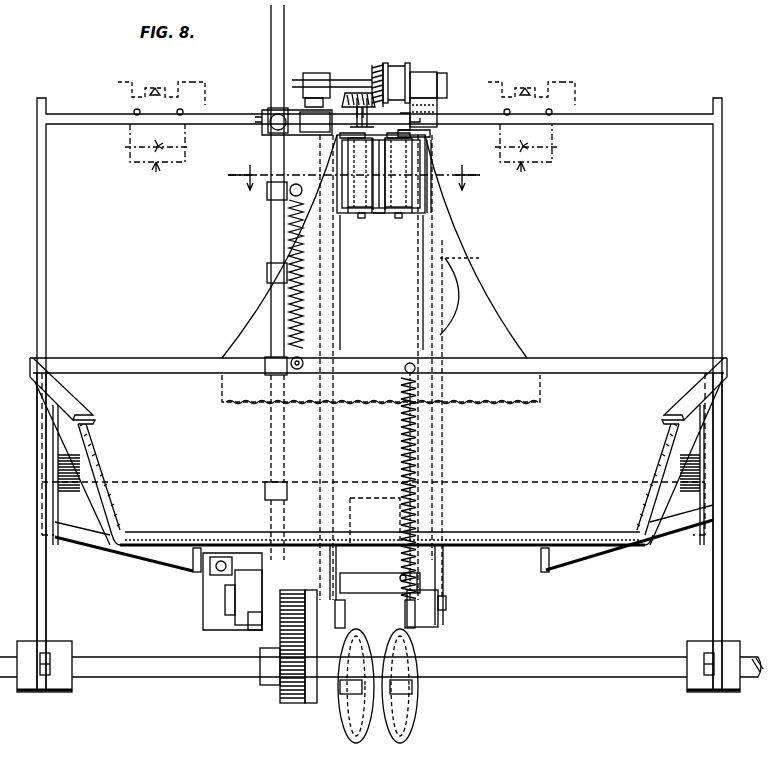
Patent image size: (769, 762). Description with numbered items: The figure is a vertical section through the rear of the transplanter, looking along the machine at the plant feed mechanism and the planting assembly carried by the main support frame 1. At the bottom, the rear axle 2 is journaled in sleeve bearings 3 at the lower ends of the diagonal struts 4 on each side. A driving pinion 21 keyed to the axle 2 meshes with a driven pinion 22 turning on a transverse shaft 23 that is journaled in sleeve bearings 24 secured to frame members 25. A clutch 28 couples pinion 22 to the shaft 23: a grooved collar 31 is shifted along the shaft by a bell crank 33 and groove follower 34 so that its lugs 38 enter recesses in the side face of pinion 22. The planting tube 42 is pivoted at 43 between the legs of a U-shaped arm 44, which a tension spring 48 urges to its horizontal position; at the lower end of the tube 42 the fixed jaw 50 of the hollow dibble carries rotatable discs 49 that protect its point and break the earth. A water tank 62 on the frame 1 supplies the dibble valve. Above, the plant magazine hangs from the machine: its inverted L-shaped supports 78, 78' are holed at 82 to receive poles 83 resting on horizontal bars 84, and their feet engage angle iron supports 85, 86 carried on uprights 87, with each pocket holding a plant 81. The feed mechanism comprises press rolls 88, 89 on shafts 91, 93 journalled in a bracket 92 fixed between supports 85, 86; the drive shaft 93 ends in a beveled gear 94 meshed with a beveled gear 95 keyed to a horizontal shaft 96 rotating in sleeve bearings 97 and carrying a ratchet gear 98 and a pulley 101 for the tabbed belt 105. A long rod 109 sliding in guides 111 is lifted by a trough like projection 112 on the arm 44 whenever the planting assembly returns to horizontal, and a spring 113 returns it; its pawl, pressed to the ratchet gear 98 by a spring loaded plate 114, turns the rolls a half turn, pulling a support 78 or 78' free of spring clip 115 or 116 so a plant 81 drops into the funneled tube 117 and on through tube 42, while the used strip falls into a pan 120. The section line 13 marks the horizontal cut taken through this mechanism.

The main support frame 1 is at (25, 355).
The axle 2 is at (95, 665).
The sleeve bearings 3 is at (58, 650).
The diagonal struts 4 is at (40, 553).
The section line 13— 13 is at (351, 177).
The driving pinion 21 is at (300, 700).
The driven pinion 22 is at (300, 630).
The transverse shaft 23 is at (228, 612).
The sleeve bearings 24 is at (418, 595).
The frame members 25 is at (332, 560).
The clutch 28 is at (252, 542).
The grooved collar 31 is at (250, 622).
The bell crank 33 is at (210, 572).
The groove follower 34 is at (236, 590).
The lugs 38 is at (270, 650).
The tube 42 is at (352, 518).
The pivot 43 is at (340, 575).
The U-shaped arm 44 is at (420, 580).
The tension spring 48 is at (420, 462).
The discs 49 is at (395, 725).
The fixed jaw 50 is at (430, 613).
The water tank 62 is at (56, 458).
The inverted L-shaped support member 78 is at (381, 105).
The inverted L-shaped support member 78' is at (336, 115).
The plant 81 is at (152, 176).
The holes 82 is at (140, 112).
The poles 83 is at (190, 108).
The horizontal bars 84 is at (92, 99).
The angle iron support 85 is at (425, 136).
The angle iron support 86 is at (320, 116).
The uprights 87 is at (445, 198).
The press roll 88 is at (398, 218).
The press roll 89 is at (362, 218).
The shaft 91 is at (380, 218).
The bracket 92 is at (432, 212).
The shaft 93 is at (368, 118).
The beveled gear 94 is at (358, 92).
The beveled gear 95 is at (378, 64).
The horizontal shaft 96 is at (338, 78).
The sleeve bearings 97 is at (312, 72).
The ratchet gear 98 is at (266, 108).
The pulley 101 is at (420, 72).
The belt 105 is at (396, 64).
The rod 109 is at (270, 230).
The guides 111 is at (266, 362).
The trough like projection 112 is at (378, 580).
The spring 113 is at (268, 252).
The spring loaded plate 114 is at (265, 110).
The spring clip 115 is at (438, 110).
The spring clip 116 is at (325, 132).
The funneled tube 117 is at (432, 345).
The pan 120 is at (90, 478).